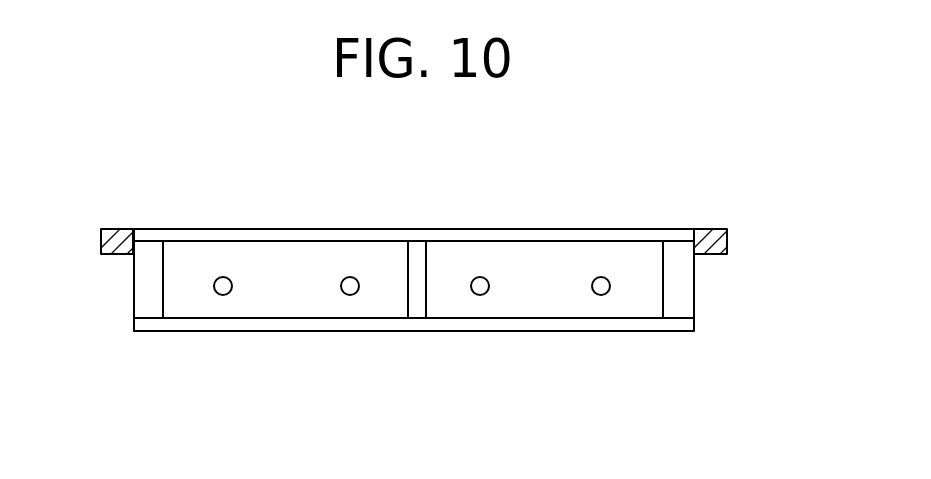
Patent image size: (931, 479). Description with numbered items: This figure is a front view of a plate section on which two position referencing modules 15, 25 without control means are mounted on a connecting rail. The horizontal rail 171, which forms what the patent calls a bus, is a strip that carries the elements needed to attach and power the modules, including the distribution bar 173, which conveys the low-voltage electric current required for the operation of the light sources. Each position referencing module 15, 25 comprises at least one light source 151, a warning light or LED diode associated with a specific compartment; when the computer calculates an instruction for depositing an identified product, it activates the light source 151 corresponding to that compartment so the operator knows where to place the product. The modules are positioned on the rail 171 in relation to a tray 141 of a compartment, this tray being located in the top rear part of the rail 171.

The tray 141 is at (117, 226).
The distribution bar 173 is at (154, 238).
The position referencing module 15 is at (414, 237).
The position referencing module 25 is at (195, 253).
The horizontal rail 171 is at (440, 226).
The light source 151 is at (230, 293).